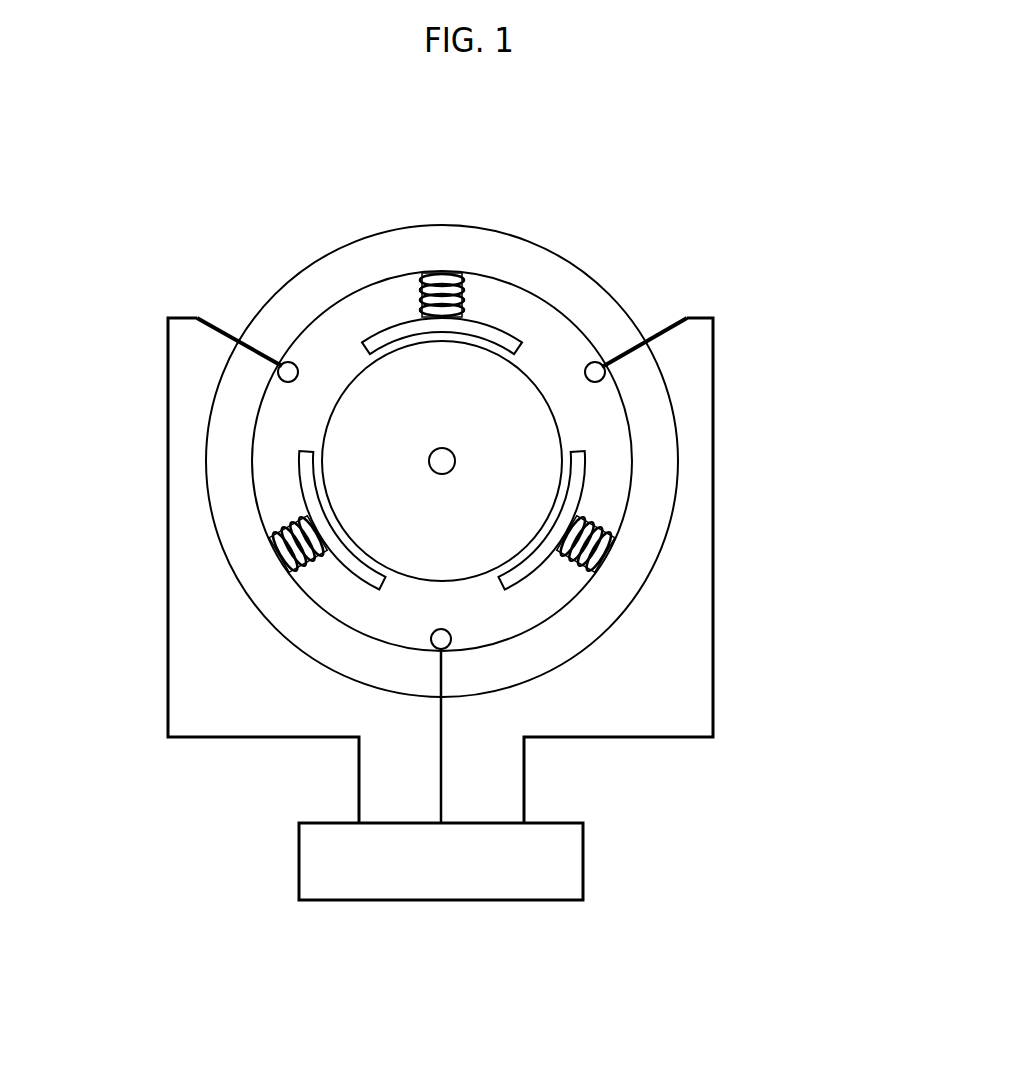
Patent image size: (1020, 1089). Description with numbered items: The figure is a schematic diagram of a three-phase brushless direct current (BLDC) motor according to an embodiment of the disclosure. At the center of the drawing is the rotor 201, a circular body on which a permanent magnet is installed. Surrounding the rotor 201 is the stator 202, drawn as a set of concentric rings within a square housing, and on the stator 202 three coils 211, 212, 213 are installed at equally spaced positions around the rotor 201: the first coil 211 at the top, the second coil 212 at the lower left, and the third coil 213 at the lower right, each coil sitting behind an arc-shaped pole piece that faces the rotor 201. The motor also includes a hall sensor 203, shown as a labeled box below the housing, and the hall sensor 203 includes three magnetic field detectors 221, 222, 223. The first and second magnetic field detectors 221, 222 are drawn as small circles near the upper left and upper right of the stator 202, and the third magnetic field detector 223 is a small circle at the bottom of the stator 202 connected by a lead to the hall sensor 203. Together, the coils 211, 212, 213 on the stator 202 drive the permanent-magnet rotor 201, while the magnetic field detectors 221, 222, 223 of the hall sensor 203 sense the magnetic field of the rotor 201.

The rotor 201 is at (540, 420).
The stator 202 is at (657, 480).
The hall sensor 203 is at (585, 860).
The coil 211 is at (440, 290).
The coil 212 is at (280, 552).
The coil 213 is at (605, 560).
The magnetic field detector 221 is at (288, 362).
The magnetic field detector 222 is at (596, 362).
The magnetic field detector 223 is at (451, 641).